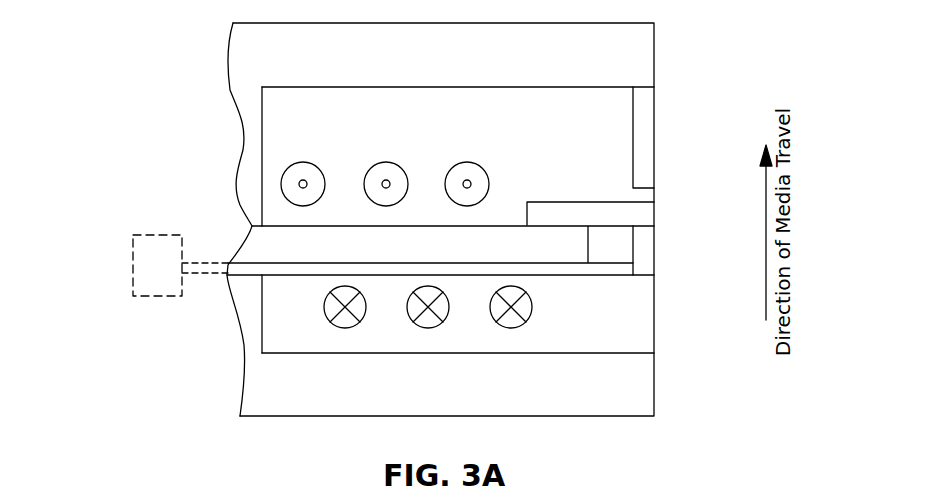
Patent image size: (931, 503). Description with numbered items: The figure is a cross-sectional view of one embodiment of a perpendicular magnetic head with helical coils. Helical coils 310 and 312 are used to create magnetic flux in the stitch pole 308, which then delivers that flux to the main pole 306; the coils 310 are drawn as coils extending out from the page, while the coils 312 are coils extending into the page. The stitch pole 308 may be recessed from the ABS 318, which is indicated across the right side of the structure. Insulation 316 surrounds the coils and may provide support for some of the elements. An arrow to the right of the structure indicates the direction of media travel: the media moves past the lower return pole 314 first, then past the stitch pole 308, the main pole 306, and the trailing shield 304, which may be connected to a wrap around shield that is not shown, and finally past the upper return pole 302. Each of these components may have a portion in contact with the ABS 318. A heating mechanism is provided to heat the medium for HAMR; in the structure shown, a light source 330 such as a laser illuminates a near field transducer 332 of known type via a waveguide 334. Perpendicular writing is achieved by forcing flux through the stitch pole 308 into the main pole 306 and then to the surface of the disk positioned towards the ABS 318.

The upper return pole 302 is at (547, 70).
The trailing shield 304 is at (655, 143).
The main pole 306 is at (655, 208).
The stitch pole 308 is at (477, 260).
The helical coils 310 is at (301, 163).
The helical coils 312 is at (329, 313).
The lower return pole 314 is at (479, 398).
The insulation 316 is at (590, 156).
The ABS 318 is at (655, 47).
The light source 330 is at (133, 274).
The near field transducer 332 is at (655, 252).
The waveguide 334 is at (249, 277).